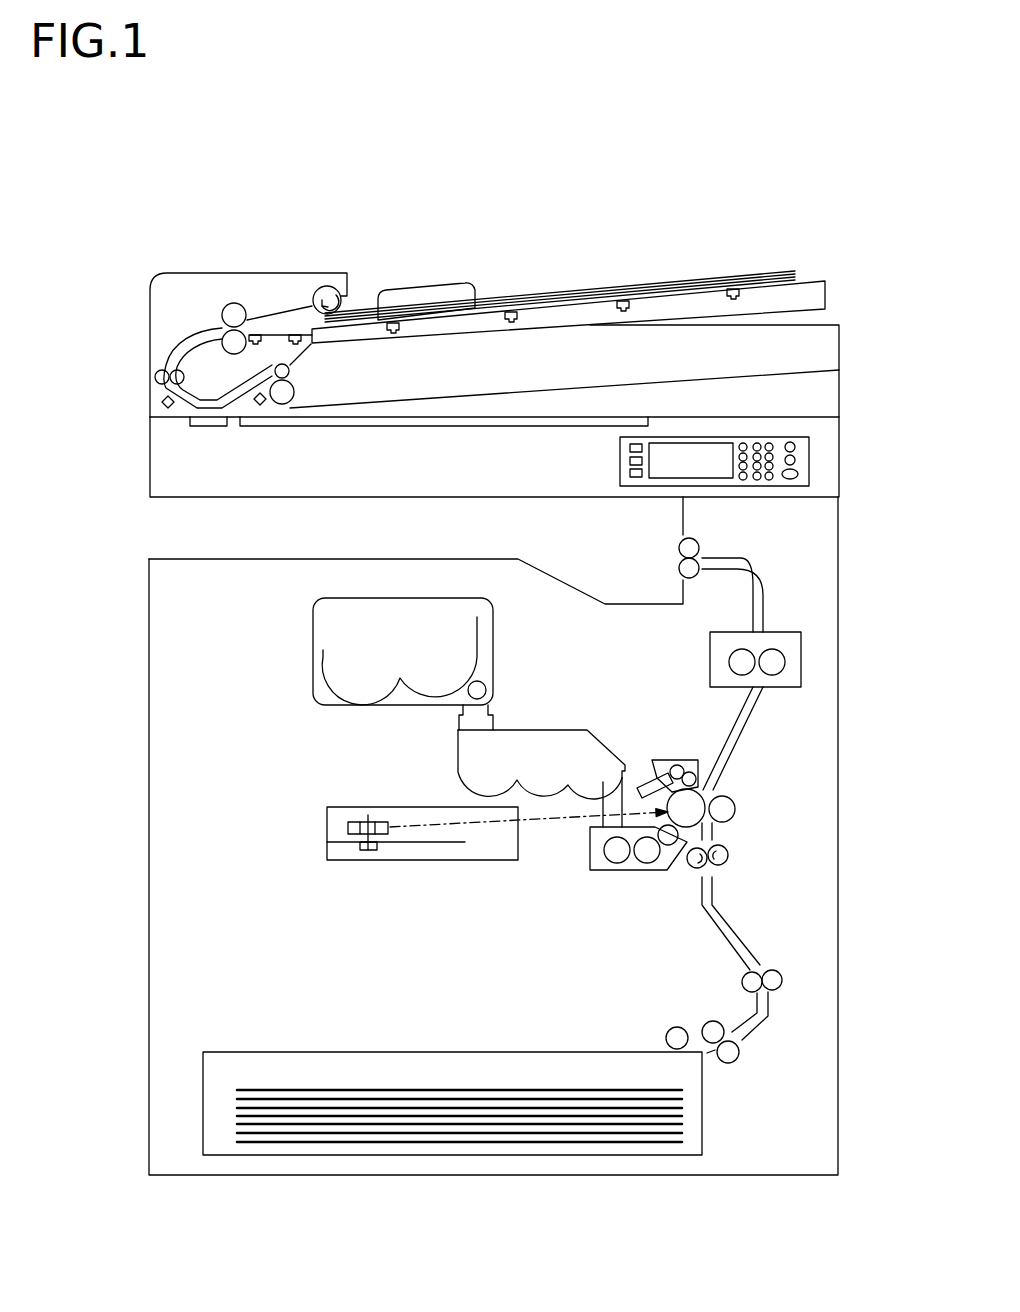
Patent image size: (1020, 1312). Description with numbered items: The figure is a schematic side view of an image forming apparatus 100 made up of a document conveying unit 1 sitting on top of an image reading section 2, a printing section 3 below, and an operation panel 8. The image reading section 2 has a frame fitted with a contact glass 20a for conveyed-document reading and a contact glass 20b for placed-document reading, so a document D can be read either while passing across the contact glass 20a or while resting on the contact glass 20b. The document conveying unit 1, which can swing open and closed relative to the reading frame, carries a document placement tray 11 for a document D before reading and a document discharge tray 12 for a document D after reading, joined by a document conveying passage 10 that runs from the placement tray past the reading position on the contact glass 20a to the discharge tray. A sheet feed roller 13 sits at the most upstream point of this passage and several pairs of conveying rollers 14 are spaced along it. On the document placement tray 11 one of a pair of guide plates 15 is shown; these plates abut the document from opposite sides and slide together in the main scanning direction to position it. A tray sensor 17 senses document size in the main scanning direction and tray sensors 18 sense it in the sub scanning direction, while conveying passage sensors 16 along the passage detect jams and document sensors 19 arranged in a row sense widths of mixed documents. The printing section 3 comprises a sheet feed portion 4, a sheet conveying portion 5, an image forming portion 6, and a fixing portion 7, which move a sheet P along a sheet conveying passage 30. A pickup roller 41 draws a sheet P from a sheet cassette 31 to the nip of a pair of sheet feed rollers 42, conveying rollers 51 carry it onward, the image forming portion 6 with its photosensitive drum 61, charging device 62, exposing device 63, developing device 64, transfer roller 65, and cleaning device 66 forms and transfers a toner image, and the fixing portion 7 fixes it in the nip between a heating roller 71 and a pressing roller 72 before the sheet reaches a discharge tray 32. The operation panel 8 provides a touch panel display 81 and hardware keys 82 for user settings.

The image forming apparatus 100 is at (710, 205).
The document conveying unit 1 is at (143, 267).
The image reading section 2 is at (138, 453).
The printing section 3 is at (138, 626).
The sheet feed portion 4 is at (717, 1059).
The sheet conveying portion 5 is at (725, 861).
The image forming portion 6 is at (500, 765).
The fixing portion 7 is at (729, 642).
The operation panel 8 is at (722, 437).
The document conveying passage 10 is at (195, 330).
The document placement tray 11 is at (823, 280).
The document discharge tray 12 is at (564, 372).
The sheet feed roller 13 is at (331, 287).
The conveying rollers 14 is at (236, 303).
The guide plates 15 is at (425, 296).
The conveying passage sensors 16 is at (255, 346).
The tray sensor 17 is at (396, 334).
The tray sensors 18 is at (511, 322).
The document sensors 19 is at (296, 344).
The contact glass for conveyed-document reading 20a is at (208, 427).
The contact glass for placed-document reading 20b is at (330, 427).
The sheet conveying passage 30 is at (757, 600).
The sheet cassette 31 is at (452, 1080).
The discharge tray 32 is at (510, 558).
The pickup roller 41 is at (674, 1027).
The sheet feed rollers 42 is at (738, 1060).
The conveying rollers 51 is at (678, 565).
The photosensitive drum 61 is at (678, 797).
The charging device 62 is at (642, 780).
The exposing device 63 is at (330, 826).
The developing device 64 is at (592, 855).
The transfer roller 65 is at (735, 808).
The cleaning device 66 is at (693, 762).
The heating roller 71 is at (735, 662).
The pressing roller 72 is at (772, 650).
The touch panel display 81 is at (678, 445).
The hardware keys 82 is at (798, 460).
The document D is at (588, 288).
The sheet P is at (297, 1090).